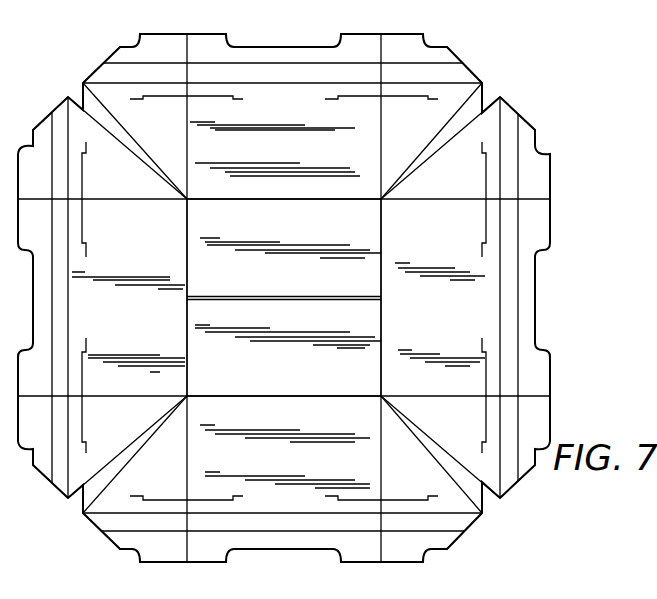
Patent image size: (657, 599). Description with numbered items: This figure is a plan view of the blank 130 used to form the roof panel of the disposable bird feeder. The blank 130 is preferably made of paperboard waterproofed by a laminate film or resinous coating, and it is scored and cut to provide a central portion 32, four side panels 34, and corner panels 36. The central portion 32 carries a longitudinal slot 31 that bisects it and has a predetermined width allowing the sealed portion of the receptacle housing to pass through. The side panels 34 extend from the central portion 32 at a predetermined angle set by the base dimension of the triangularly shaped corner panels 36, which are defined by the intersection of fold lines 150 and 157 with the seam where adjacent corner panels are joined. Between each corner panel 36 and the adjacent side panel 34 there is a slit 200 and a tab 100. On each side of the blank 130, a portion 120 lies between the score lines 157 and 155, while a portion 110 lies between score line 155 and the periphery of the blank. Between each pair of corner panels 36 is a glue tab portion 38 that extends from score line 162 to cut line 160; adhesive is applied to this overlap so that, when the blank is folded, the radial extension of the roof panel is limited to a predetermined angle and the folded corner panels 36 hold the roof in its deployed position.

The longitudinal slot 31 is at (312, 297).
The central portion 32 is at (268, 284).
The side panel 34 is at (283, 112).
The corner panel 36 is at (129, 186).
The glue tab portion 38 is at (76, 96).
The tab 100 is at (550, 222).
The portion 110 is at (528, 122).
The portion 120 is at (522, 116).
The blank 130 is at (556, 408).
The fold line 150 is at (531, 199).
The score line 155 is at (518, 295).
The score line 157 is at (500, 272).
The cut line 160 is at (92, 117).
The score line 162 is at (108, 110).
The slit 200 is at (488, 170).